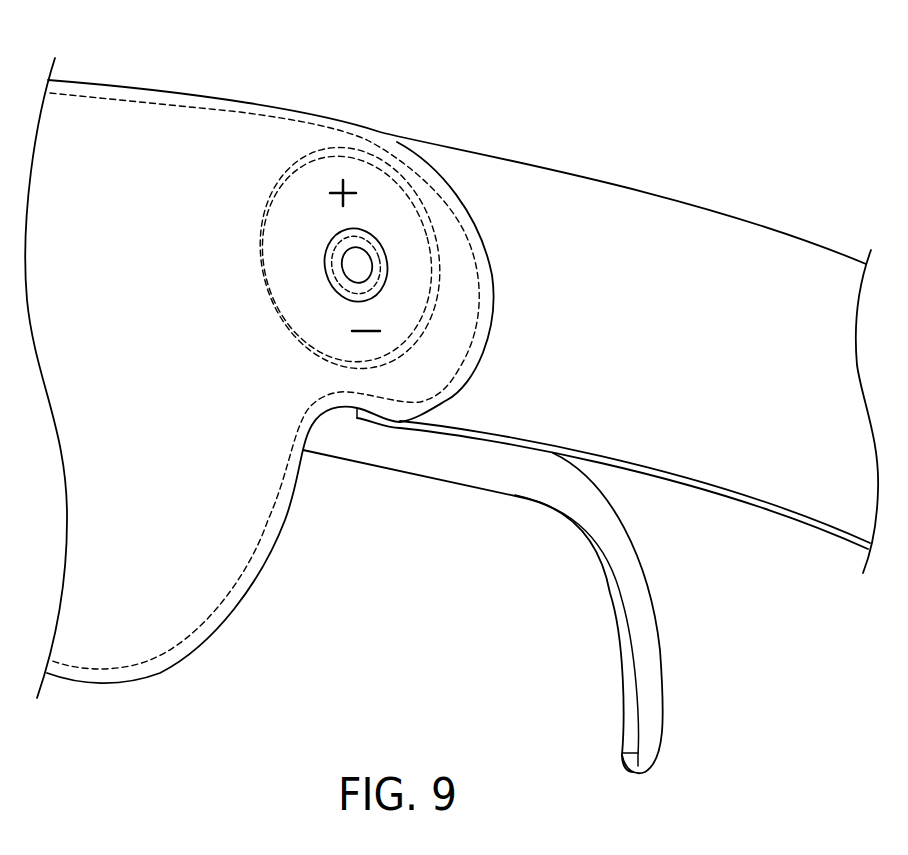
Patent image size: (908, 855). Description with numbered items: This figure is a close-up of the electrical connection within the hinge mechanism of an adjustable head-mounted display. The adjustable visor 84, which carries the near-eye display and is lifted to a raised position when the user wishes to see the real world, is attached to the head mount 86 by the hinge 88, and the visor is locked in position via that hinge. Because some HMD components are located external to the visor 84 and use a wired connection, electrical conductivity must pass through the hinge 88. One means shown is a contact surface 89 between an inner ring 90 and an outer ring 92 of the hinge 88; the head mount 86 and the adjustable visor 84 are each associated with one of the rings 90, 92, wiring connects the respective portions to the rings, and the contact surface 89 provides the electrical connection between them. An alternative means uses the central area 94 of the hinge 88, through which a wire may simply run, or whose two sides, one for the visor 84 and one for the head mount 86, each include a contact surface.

The adjustable visor 84 is at (143, 90).
The head mount 86 is at (797, 519).
The hinge 88 is at (392, 258).
The contact surface 89 is at (333, 260).
The inner ring 90 is at (340, 247).
The outer ring 92 is at (392, 224).
The central area 94 is at (357, 263).